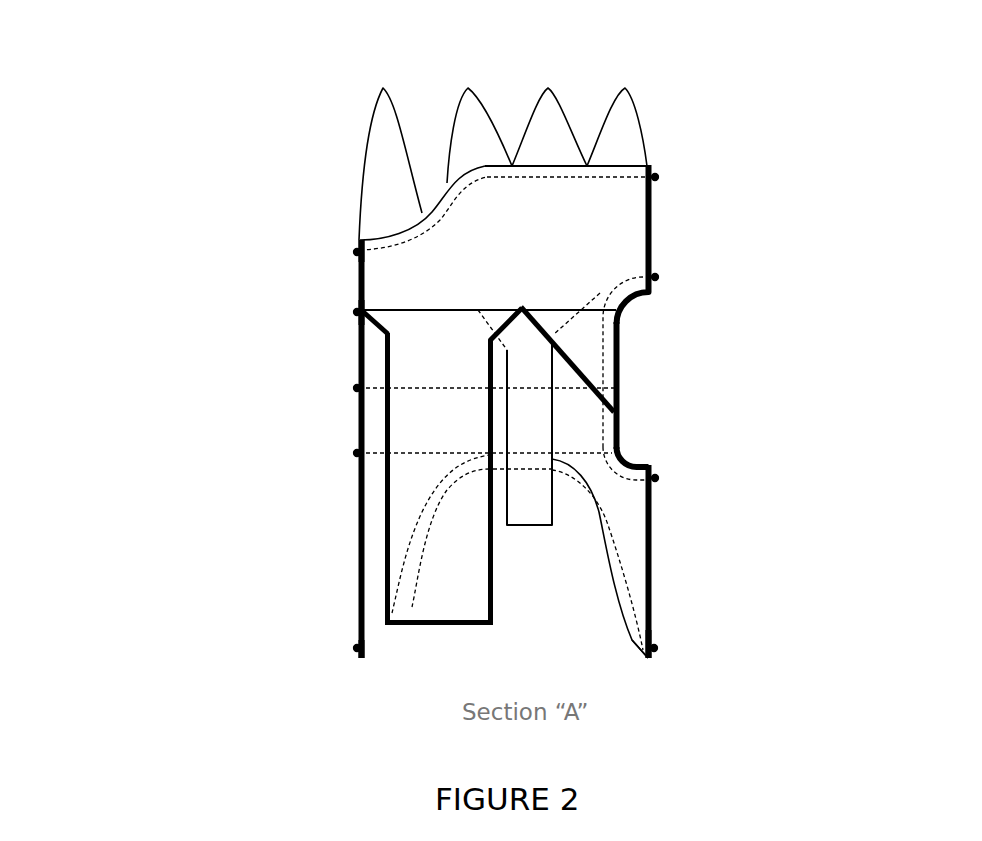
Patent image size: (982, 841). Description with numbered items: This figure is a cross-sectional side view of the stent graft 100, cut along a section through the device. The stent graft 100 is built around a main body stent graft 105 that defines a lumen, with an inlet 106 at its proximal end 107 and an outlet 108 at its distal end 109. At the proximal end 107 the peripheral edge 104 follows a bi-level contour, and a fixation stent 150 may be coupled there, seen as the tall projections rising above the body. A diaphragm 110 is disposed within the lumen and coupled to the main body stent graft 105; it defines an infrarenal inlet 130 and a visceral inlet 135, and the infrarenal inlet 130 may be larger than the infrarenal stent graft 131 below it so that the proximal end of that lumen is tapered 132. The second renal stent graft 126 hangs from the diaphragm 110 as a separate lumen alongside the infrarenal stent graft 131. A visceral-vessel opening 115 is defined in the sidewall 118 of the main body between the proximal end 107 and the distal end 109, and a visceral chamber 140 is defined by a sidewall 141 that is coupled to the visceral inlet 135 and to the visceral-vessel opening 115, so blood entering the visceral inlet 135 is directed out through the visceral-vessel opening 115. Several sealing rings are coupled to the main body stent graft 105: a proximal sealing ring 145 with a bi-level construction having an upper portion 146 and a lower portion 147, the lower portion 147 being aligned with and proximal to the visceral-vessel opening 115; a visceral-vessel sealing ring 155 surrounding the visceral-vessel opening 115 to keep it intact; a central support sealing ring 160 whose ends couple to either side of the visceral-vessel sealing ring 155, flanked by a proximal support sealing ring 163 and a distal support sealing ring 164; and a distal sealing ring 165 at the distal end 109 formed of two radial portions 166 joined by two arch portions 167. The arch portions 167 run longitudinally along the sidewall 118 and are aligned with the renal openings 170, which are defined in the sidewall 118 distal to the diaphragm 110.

The stent graft 100 is at (180, 108).
The peripheral edge 104 is at (398, 235).
The main body stent graft 105 is at (349, 583).
The inlet 106 is at (347, 199).
The proximal end 107 is at (675, 143).
The outlet 108 is at (402, 625).
The distal end 109 is at (690, 666).
The diaphragm 110 is at (478, 290).
The visceral-vessel opening 115 is at (615, 337).
The sidewall 118 is at (650, 607).
The second renal stent graft 126 is at (552, 503).
The infrarenal inlet 130 is at (437, 310).
The infrarenal stent graft 131 is at (385, 540).
The tapered proximal end 132 is at (372, 325).
The visceral inlet 135 is at (557, 308).
The visceral chamber 140 is at (588, 387).
The sidewall 141 is at (596, 337).
The proximal sealing ring 145 is at (543, 164).
The upper portion 146 is at (655, 177).
The lower portion 147 is at (357, 252).
The fixation stent 150 is at (368, 147).
The visceral-vessel sealing ring 155 is at (655, 478).
The support sealing ring 160 is at (357, 388).
The proximal support sealing ring 163 is at (357, 312).
The distal support sealing ring 164 is at (357, 453).
The distal sealing ring 165 is at (357, 648).
The radial portion 166 is at (474, 503).
The arch portion 167 is at (646, 680).
The renal opening 170 is at (592, 558).